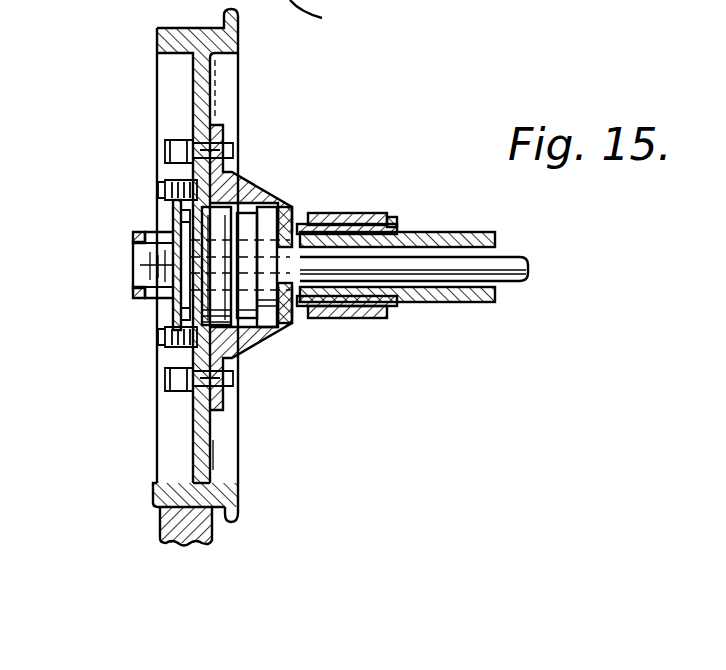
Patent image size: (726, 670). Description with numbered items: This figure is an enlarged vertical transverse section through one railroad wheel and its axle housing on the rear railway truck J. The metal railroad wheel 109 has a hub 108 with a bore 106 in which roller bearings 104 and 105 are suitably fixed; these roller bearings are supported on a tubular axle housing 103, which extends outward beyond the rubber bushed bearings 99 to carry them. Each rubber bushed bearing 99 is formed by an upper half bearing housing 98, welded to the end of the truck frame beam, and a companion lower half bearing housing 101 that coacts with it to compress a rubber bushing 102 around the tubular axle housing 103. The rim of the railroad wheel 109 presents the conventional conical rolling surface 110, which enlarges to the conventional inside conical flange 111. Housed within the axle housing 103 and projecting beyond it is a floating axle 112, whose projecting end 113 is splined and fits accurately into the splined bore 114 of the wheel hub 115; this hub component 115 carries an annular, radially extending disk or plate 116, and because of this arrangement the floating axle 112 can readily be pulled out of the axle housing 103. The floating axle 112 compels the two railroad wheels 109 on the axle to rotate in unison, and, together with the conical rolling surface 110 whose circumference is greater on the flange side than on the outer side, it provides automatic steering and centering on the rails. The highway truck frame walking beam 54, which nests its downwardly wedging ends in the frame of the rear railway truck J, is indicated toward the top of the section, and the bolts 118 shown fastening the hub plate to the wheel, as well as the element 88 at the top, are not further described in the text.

The walking beam 54 is at (79, 2).
The tire 88 is at (322, 18).
The upper half bearing housing 98 is at (348, 212).
The rubber bushed bearing 99 is at (405, 212).
The lower half bearing housing 101 is at (350, 320).
The rubber bushing 102 is at (385, 318).
The tubular axle housing 103 is at (468, 238).
The roller bearing 104 is at (258, 178).
The roller bearing 105 is at (285, 202).
The bore 106 is at (180, 323).
The hub 108 is at (250, 330).
The railroad wheel 109 is at (232, 490).
The conical rolling surface 110 is at (160, 512).
The inside conical flange 111 is at (231, 517).
The floating axle 112 is at (528, 274).
The projecting end 113 is at (136, 266).
The splined bore 114 is at (150, 277).
The wheel hub 115 is at (180, 216).
The annular radially extending disk or plate 116 is at (185, 208).
The bolt 118 is at (162, 190).
The rear railway truck J is at (383, 205).